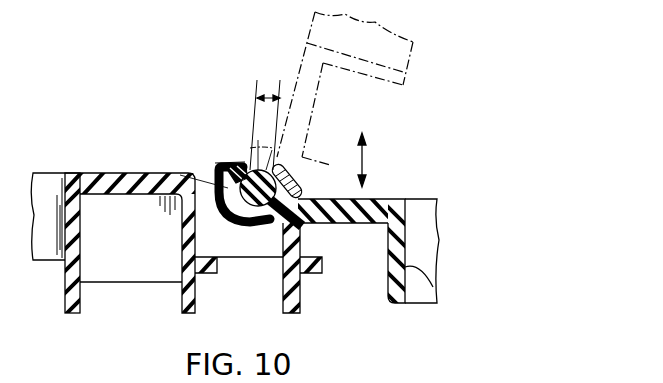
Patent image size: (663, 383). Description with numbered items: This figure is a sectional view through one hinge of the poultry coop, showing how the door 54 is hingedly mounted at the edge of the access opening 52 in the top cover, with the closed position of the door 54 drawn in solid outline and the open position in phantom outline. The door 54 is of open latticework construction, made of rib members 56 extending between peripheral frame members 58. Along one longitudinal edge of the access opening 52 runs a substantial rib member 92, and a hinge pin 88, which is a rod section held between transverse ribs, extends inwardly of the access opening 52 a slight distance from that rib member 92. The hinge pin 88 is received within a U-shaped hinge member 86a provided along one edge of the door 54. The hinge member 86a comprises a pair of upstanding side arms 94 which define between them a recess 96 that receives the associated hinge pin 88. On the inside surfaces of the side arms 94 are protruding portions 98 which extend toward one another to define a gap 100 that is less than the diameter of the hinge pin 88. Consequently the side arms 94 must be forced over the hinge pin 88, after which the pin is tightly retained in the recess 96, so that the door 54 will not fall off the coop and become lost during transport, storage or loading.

The access opening 52 is at (327, 262).
The door 54 is at (398, 195).
The rib members 56 is at (430, 278).
The peripheral frame members 58 is at (370, 198).
The U-shaped hinge member 86a is at (218, 158).
The hinge pin 88 is at (214, 165).
The rib member 92 is at (128, 176).
The side arms 94 is at (225, 191).
The recess 96 is at (262, 212).
The protruding portions 98 is at (237, 160).
The gap 100 is at (270, 96).